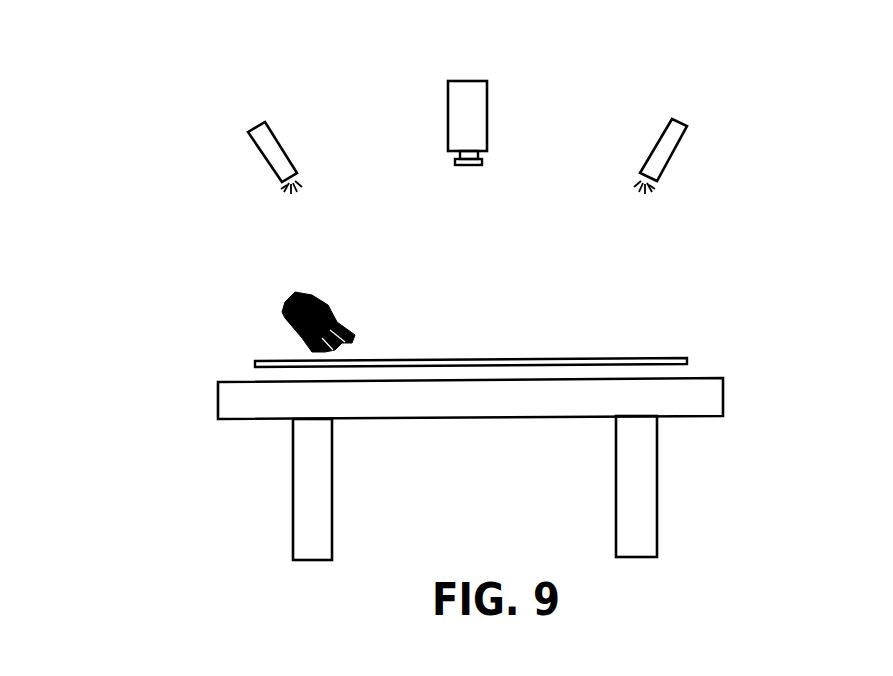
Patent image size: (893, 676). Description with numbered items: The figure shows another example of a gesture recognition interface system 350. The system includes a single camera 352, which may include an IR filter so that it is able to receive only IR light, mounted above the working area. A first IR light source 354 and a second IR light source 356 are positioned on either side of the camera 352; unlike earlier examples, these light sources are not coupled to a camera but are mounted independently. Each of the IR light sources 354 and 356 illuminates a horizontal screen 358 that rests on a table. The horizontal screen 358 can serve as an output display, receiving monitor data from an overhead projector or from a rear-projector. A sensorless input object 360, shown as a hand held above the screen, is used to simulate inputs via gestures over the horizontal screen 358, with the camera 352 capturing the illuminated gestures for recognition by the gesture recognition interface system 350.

The gesture recognition interface system 350 is at (124, 94).
The camera 352 is at (487, 102).
The first IR light source 354 is at (283, 148).
The second IR light source 356 is at (653, 150).
The horizontal screen 358 is at (633, 357).
The sensorless input object 360 is at (327, 303).